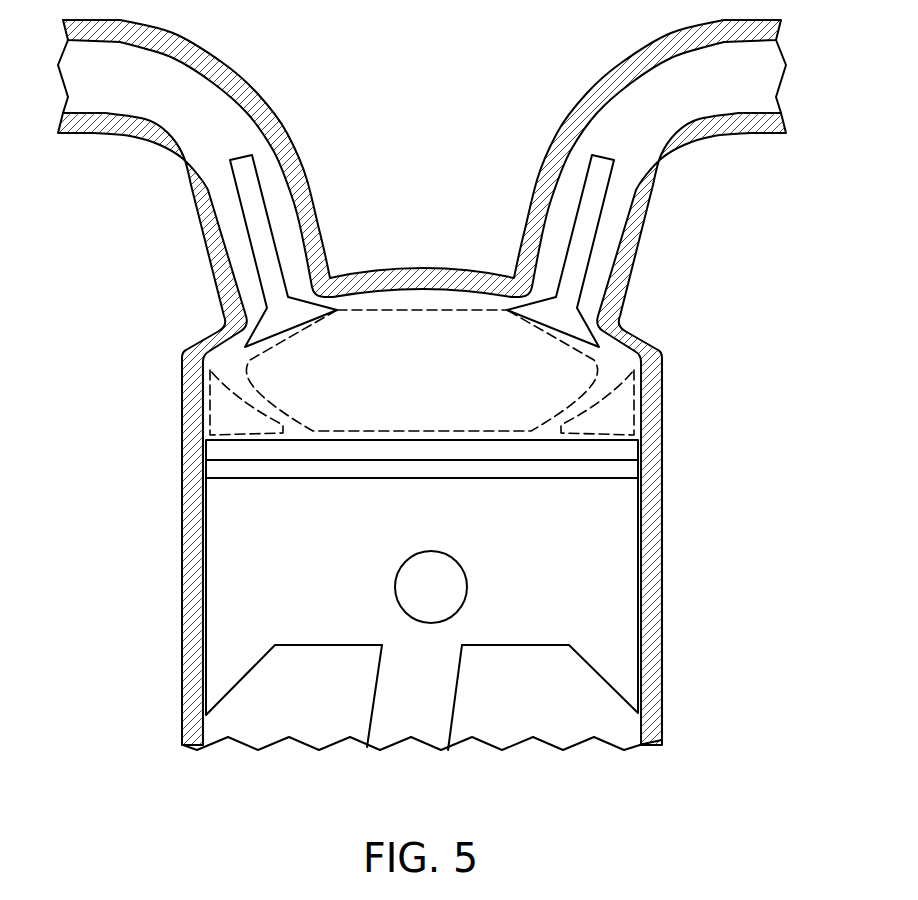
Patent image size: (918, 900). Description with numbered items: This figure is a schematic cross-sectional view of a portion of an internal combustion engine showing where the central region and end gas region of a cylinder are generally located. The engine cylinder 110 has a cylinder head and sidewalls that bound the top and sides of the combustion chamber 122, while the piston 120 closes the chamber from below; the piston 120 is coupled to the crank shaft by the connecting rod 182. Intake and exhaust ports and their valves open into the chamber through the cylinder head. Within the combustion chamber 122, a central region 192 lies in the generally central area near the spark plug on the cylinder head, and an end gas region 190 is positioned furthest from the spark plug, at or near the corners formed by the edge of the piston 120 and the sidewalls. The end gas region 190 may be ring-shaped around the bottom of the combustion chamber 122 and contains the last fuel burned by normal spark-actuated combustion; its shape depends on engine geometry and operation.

The engine cylinder 110 is at (663, 358).
The piston 120 is at (417, 440).
The combustion chamber 122 is at (446, 362).
The connecting rod 182 is at (373, 700).
The end gas region 190 is at (205, 407).
The central region 192 is at (419, 311).